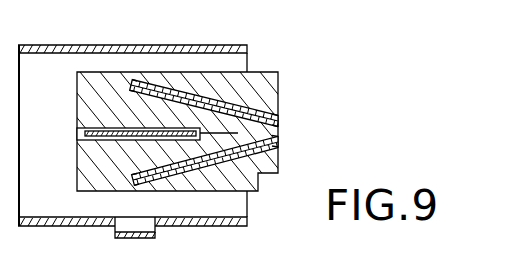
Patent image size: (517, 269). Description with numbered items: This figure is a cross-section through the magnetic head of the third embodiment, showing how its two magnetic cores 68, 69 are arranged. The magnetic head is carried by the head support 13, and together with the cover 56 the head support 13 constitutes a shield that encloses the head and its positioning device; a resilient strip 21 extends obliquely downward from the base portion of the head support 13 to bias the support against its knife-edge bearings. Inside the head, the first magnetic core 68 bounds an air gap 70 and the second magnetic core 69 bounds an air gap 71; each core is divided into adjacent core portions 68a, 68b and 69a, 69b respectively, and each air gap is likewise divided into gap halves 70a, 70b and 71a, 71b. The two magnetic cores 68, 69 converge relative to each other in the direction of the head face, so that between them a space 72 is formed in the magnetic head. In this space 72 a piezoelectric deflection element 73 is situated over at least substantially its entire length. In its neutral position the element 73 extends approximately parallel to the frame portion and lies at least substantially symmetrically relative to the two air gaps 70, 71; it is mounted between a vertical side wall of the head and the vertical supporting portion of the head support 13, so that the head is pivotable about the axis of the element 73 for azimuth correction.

The head support 13 is at (192, 227).
The resilient strip 21 is at (137, 239).
The cover 56 is at (166, 45).
The magnetic core 68 is at (246, 103).
The core portion 68a is at (136, 79).
The core portion 68b is at (130, 92).
The magnetic core 69 is at (230, 164).
The core portion 69a is at (133, 175).
The core portion 69b is at (135, 187).
The air gap 70 is at (283, 122).
The gap half 70a is at (284, 121).
The gap half 70b is at (284, 122).
The air gap 71 is at (286, 143).
The gap half 71a is at (287, 142).
The gap half 71b is at (287, 144).
The space 72 is at (100, 120).
The piezoelectric deflection element 73 is at (84, 136).